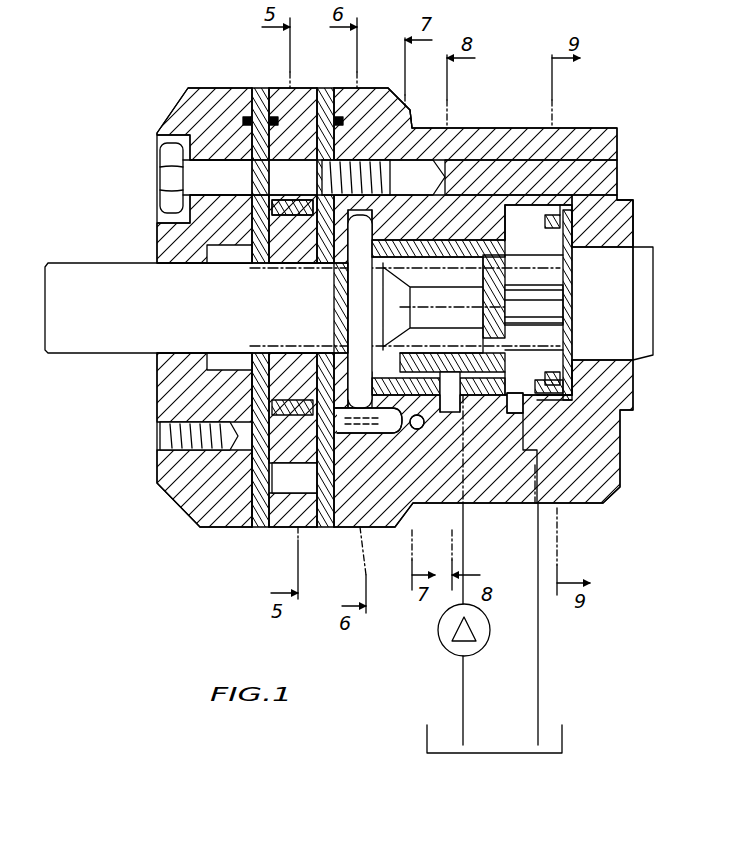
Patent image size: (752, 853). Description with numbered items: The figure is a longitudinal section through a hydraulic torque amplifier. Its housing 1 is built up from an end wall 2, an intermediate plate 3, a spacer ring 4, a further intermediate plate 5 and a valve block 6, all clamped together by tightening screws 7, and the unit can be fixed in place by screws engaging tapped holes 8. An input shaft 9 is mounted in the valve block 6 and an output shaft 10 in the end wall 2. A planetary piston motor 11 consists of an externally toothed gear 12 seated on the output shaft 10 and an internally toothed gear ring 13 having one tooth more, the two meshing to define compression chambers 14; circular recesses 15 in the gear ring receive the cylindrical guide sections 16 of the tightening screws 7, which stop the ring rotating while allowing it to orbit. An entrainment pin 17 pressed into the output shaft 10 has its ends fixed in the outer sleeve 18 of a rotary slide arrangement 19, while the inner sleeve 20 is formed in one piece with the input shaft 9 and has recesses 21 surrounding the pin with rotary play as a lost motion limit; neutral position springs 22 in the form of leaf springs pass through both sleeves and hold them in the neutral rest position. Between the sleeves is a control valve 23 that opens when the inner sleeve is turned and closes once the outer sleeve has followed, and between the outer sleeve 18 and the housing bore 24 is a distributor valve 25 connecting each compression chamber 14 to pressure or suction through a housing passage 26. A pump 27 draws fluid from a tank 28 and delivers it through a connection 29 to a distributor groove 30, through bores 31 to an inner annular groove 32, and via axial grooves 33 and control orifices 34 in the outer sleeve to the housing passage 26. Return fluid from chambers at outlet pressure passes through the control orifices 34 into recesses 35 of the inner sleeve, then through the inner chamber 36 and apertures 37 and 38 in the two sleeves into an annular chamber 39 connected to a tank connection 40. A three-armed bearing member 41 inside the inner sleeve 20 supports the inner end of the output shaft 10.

The housing 1 is at (480, 127).
The end wall 2 is at (185, 112).
The intermediate plate 3 is at (258, 88).
The spacer ring 4 is at (300, 88).
The further intermediate plate 5 is at (322, 88).
The valve block 6 is at (405, 112).
The tightening screws 7 is at (160, 180).
The tapped holes 8 is at (160, 437).
The input shaft 9 is at (646, 282).
The output shaft 10 is at (154, 318).
The motor 11 is at (245, 452).
The externally toothed gear 12 is at (290, 365).
The internally toothed gear ring 13 is at (275, 468).
The compression chambers 14 is at (295, 478).
The circular recesses 15 is at (285, 145).
The cylindrical guide sections 16 is at (300, 180).
The entrainment pin 17 is at (350, 255).
The outer sleeve 18 is at (492, 414).
The rotary slide arrangement 19 is at (545, 386).
The inner sleeve 20 is at (480, 340).
The recesses 21 is at (340, 238).
The neutral position springs 22 is at (566, 335).
The control valve 23 is at (575, 242).
The housing bore 24 is at (505, 235).
The distributor valve 25 is at (560, 212).
The housing passage 26 is at (368, 434).
The pump 27 is at (439, 640).
The tank 28 is at (427, 746).
The connection 29 is at (465, 508).
The distributor groove 30 is at (447, 412).
The bores 31 is at (434, 206).
The inner annular groove 32 is at (488, 370).
The axial grooves 33 is at (345, 357).
The control orifices 34 is at (398, 433).
The recesses 35 is at (395, 250).
The inner chamber 36 is at (562, 264).
The aperture 37 is at (545, 362).
The aperture 38 is at (560, 402).
The annular chamber 39 is at (552, 394).
The tank connection 40 is at (538, 505).
The three-armed bearing member 41 is at (512, 278).